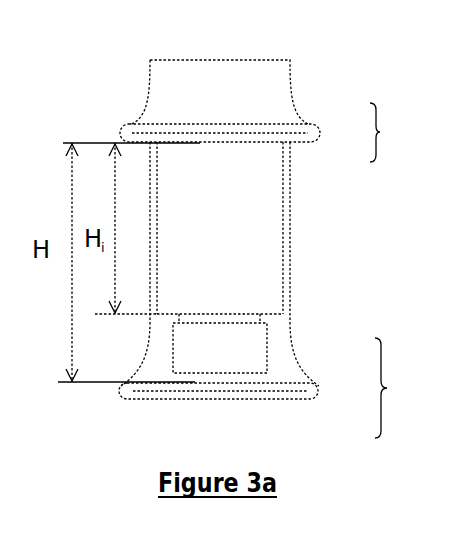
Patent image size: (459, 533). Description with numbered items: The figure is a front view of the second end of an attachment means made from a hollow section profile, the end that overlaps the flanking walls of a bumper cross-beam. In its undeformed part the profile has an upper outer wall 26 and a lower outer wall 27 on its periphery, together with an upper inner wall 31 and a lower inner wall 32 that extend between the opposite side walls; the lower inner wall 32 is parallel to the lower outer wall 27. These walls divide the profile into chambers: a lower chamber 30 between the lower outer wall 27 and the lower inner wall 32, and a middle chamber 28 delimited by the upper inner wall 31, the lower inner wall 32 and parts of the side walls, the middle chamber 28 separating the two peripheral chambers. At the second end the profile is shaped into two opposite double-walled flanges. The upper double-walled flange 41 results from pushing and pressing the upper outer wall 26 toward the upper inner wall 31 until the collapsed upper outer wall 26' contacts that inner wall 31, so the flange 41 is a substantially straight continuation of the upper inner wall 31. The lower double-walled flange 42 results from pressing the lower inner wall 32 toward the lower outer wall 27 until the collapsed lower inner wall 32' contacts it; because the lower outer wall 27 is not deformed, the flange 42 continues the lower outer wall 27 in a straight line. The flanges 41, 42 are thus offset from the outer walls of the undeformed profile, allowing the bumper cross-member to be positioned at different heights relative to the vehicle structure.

The upper outer wall 26 is at (221, 63).
The collapsed upper outer wall 26' is at (244, 123).
The upper inner wall 31 is at (230, 136).
The upper double-walled flange 41 is at (392, 132).
The middle chamber 28 is at (248, 215).
The lower inner wall 32 is at (260, 301).
The lower chamber 30 is at (246, 342).
The collapsed lower inner wall 32' is at (249, 368).
The lower outer wall 27 is at (290, 397).
The lower double-walled flange 42 is at (396, 388).